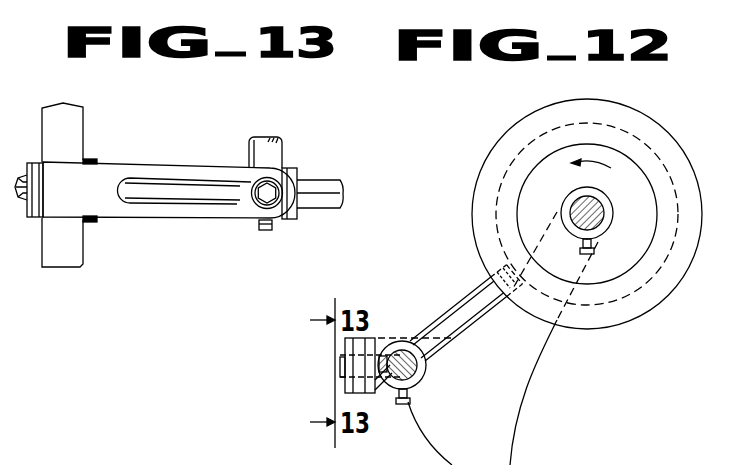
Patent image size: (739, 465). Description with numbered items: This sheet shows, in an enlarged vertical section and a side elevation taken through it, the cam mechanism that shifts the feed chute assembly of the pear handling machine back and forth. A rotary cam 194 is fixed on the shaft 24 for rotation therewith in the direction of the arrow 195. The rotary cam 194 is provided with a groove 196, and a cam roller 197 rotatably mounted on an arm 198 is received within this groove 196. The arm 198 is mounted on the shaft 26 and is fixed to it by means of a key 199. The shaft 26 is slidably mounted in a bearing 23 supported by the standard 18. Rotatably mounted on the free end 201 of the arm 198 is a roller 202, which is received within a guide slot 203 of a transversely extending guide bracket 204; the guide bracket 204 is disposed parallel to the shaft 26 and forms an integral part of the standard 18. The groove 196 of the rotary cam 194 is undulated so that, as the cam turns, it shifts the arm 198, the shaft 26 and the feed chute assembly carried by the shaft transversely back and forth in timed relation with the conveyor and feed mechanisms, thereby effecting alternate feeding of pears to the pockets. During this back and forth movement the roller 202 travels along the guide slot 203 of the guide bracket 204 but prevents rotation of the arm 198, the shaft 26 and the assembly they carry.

In FIG. 13, the standard 18 is at (70, 139).
In FIG. 12, the standard 18 is at (484, 456).
In FIG. 13, the bearing 23 is at (38, 218).
In FIG. 12, the bearing 23 is at (400, 341).
In FIG. 12, the shaft 24 is at (601, 207).
In FIG. 13, the shaft 26 is at (330, 206).
In FIG. 12, the shaft 26 is at (409, 371).
In FIG. 12, the rotary cam 194 is at (506, 149).
In FIG. 12, the arrow 195 is at (585, 174).
In FIG. 12, the groove 196 is at (614, 302).
In FIG. 12, the cam roller 197 is at (488, 266).
In FIG. 13, the arm 198 is at (276, 137).
In FIG. 12, the arm 198 is at (478, 292).
In FIG. 12, the key 199 is at (384, 360).
In FIG. 13, the free end 201 is at (252, 188).
In FIG. 12, the free end 201 is at (373, 393).
In FIG. 13, the roller 202 is at (280, 182).
In FIG. 12, the roller 202 is at (345, 384).
In FIG. 13, the guide slot 203 is at (182, 204).
In FIG. 13, the guide bracket 204 is at (110, 195).
In FIG. 12, the guide bracket 204 is at (347, 348).